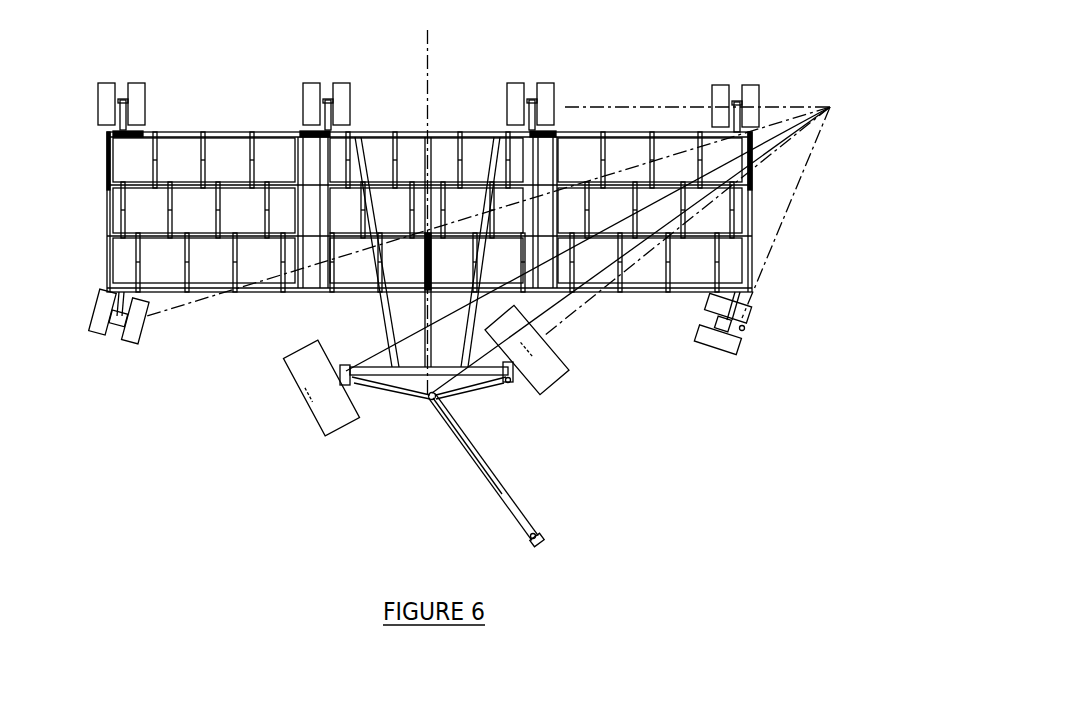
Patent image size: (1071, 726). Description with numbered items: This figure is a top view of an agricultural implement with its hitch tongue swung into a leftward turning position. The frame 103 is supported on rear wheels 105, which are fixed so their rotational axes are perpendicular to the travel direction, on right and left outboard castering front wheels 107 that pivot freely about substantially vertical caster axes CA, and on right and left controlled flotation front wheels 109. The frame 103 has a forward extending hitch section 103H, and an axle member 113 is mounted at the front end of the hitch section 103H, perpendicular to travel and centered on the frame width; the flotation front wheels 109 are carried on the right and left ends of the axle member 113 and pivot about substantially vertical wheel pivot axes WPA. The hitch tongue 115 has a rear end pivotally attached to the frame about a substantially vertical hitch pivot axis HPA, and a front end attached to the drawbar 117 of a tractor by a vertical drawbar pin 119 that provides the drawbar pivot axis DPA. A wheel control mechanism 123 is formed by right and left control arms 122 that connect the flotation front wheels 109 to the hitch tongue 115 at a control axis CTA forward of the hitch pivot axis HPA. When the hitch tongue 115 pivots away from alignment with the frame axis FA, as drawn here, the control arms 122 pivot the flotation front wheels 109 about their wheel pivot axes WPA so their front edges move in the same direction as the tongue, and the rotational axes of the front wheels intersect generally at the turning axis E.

The frame 103 is at (590, 133).
The hitch section 103H is at (384, 323).
The rear wheels 105 is at (348, 92).
The outboard castering front wheels 107 is at (755, 320).
The controlled flotation front wheels 109 is at (570, 371).
The axle member 113 is at (382, 368).
The hitch tongue 115 is at (480, 480).
The drawbar 117 is at (540, 537).
The drawbar pin 119 is at (534, 537).
The control arms 122 is at (494, 388).
The wheel control mechanism 123 is at (400, 400).
The hitch pivot axis HPA is at (396, 382).
The control axis CTA is at (430, 398).
The wheel pivot axes WPA is at (510, 382).
The drawbar pivot axis DPA is at (531, 540).
The caster axes CA is at (742, 330).
The frame axis FA is at (428, 56).
The turning axis E is at (830, 107).